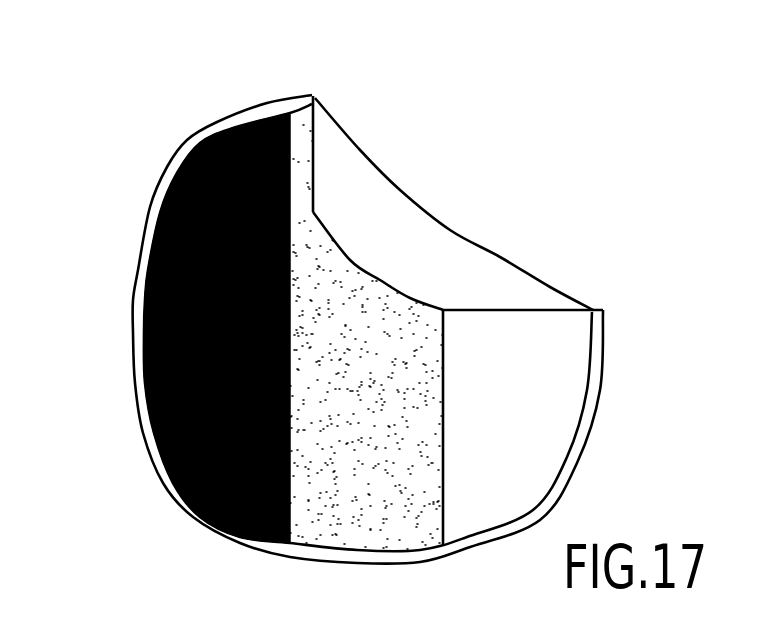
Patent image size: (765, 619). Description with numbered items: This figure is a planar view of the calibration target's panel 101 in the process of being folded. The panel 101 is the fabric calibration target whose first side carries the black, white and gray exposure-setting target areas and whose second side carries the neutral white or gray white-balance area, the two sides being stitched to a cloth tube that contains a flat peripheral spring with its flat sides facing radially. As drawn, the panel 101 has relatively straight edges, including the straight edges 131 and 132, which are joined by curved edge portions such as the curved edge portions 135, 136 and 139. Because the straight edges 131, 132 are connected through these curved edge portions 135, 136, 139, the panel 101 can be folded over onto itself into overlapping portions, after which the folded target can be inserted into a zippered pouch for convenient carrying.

The panel 101 is at (200, 135).
The straight edge 131 is at (307, 93).
The straight edge 132 is at (592, 320).
The curved edge portion 135 is at (160, 213).
The curved edge portion 136 is at (382, 280).
The curved edge portion 139 is at (200, 517).